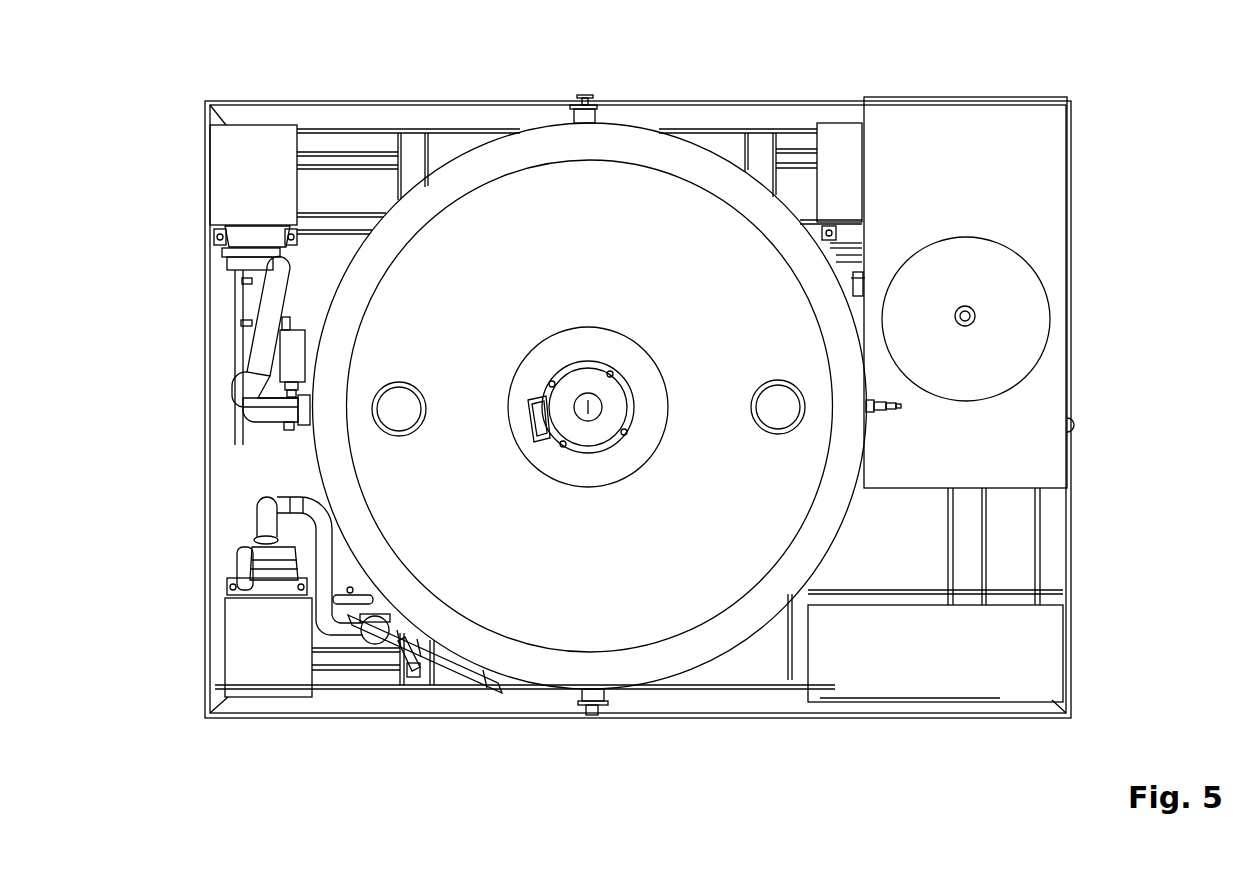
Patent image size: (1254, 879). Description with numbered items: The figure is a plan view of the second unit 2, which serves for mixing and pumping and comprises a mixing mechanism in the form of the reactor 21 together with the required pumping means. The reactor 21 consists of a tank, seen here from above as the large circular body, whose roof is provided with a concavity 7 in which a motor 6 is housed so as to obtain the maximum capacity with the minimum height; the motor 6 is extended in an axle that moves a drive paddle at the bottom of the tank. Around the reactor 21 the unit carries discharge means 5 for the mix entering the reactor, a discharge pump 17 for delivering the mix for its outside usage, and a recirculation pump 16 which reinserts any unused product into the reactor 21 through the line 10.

The second unit 2 is at (1085, 553).
The discharge means 5 is at (835, 153).
The motor 6 is at (604, 397).
The concavity 7 is at (558, 348).
The line 10 is at (267, 347).
The recirculation pump 16 is at (240, 185).
The discharge pump 17 is at (282, 667).
The reactor 21 is at (637, 222).